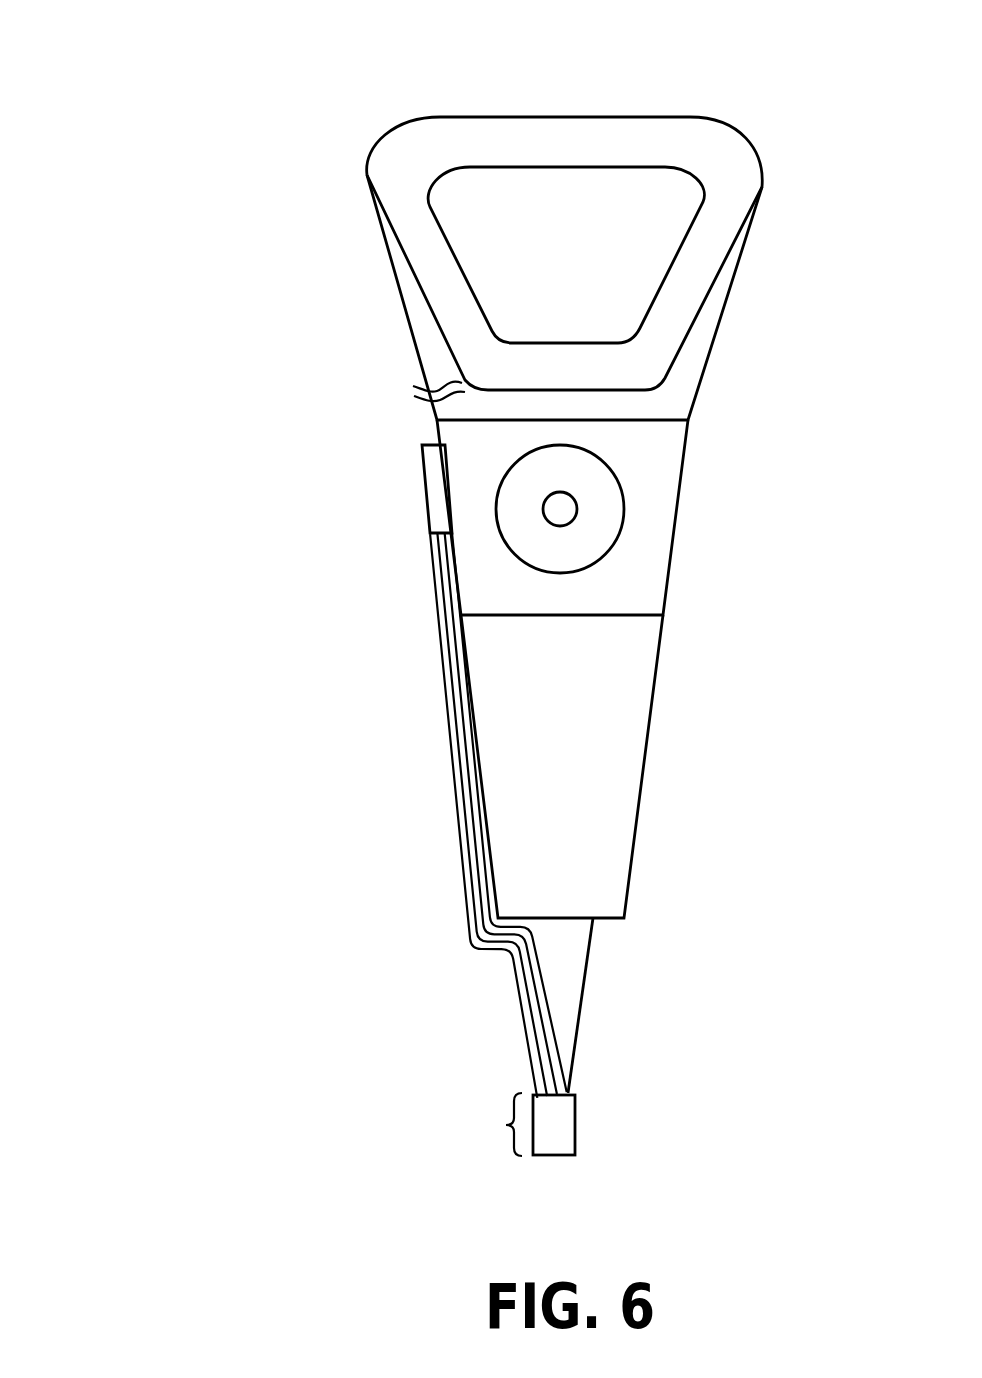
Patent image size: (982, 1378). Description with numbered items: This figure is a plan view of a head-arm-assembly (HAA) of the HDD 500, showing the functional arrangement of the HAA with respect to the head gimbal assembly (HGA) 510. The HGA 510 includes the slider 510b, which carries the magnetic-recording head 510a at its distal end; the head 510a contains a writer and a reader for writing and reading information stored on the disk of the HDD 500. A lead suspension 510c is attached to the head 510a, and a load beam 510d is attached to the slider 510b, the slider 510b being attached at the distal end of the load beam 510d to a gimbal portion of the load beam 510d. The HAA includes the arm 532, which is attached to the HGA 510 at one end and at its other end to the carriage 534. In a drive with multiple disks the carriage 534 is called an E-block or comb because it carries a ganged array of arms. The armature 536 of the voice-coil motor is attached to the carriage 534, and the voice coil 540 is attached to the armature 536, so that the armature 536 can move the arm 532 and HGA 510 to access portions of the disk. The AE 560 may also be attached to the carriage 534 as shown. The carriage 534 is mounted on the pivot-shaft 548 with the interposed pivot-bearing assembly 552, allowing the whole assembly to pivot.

The HDD 500 is at (136, 92).
The voice coil 540 is at (437, 283).
The armature 536 is at (435, 358).
The AE 560 is at (437, 500).
The pivot-shaft 548 is at (558, 508).
The pivot-bearing assembly 552 is at (602, 522).
The carriage 534 is at (630, 573).
The arm 532 is at (555, 715).
The head gimbal assembly 510 is at (312, 867).
The magnetic-recording head 510a is at (540, 1145).
The slider 510b is at (507, 1125).
The lead suspension 510c is at (528, 1012).
The load beam 510d is at (557, 967).